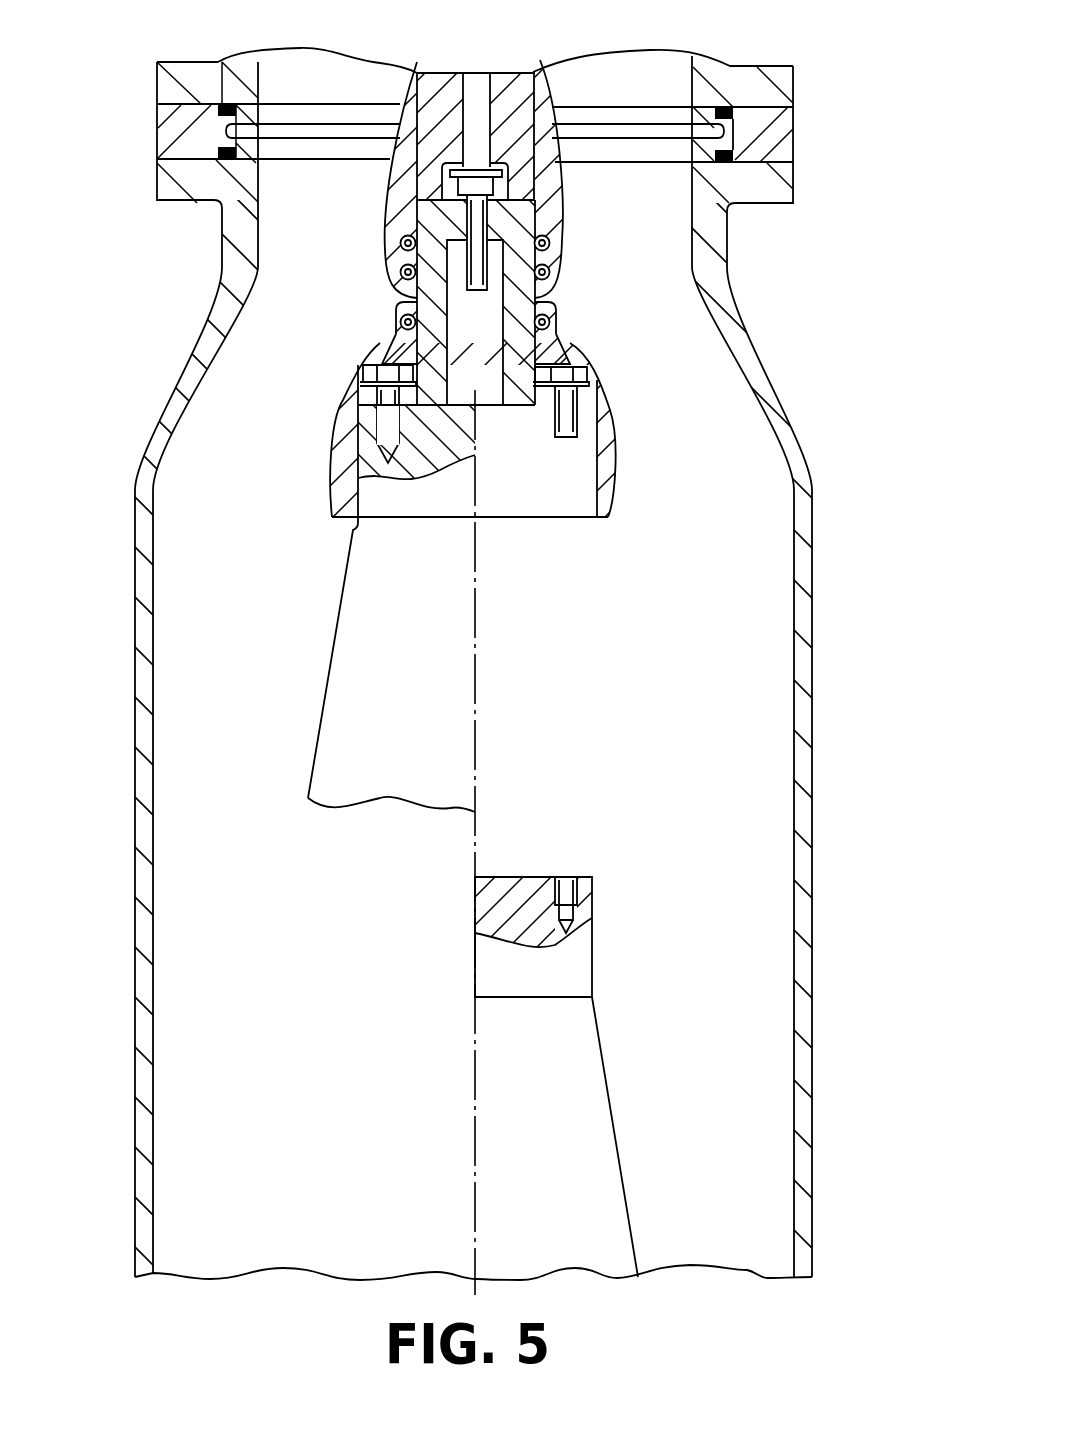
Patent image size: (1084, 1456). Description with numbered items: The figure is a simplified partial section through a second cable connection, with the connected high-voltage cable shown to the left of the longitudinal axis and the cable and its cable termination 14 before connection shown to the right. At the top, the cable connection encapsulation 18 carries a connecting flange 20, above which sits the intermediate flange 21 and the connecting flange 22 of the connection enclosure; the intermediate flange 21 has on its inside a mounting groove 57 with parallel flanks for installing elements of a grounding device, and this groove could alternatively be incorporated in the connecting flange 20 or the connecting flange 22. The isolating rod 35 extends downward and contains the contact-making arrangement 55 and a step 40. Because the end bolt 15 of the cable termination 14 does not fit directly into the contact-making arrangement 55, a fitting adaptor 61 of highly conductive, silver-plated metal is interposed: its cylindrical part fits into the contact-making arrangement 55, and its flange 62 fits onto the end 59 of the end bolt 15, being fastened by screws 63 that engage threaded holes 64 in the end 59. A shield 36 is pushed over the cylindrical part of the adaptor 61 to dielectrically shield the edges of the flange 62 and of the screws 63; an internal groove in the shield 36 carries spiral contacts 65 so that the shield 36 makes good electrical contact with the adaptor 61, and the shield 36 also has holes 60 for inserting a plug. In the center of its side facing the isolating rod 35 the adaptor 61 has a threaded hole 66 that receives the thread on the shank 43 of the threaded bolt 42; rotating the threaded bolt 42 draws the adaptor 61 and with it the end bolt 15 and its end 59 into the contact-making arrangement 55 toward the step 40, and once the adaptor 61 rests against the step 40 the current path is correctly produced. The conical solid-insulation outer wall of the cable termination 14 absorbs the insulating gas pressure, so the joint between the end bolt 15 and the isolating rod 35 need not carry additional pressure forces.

The cable termination 14 is at (575, 1055).
The end bolt 15 is at (572, 970).
The cable connection encapsulation 18 is at (811, 762).
The connecting flange 20 is at (767, 182).
The intermediate flange 21 is at (773, 140).
The connecting flange 22 is at (762, 85).
The isolating rod 35 is at (515, 97).
The shield 36 is at (612, 490).
The step 40 is at (530, 195).
The threaded bolt 42 is at (477, 103).
The shank 43 is at (480, 278).
The contact-making arrangement 55 is at (550, 245).
The mounting groove 57 is at (363, 133).
The end 59 is at (538, 877).
The holes 60 is at (383, 330).
The fitting adaptor 61 is at (437, 300).
The flange 62 is at (590, 392).
The screws 63 is at (567, 423).
The threaded holes 64 is at (575, 893).
The spiral contacts 65 is at (407, 313).
The threaded hole 66 is at (487, 217).